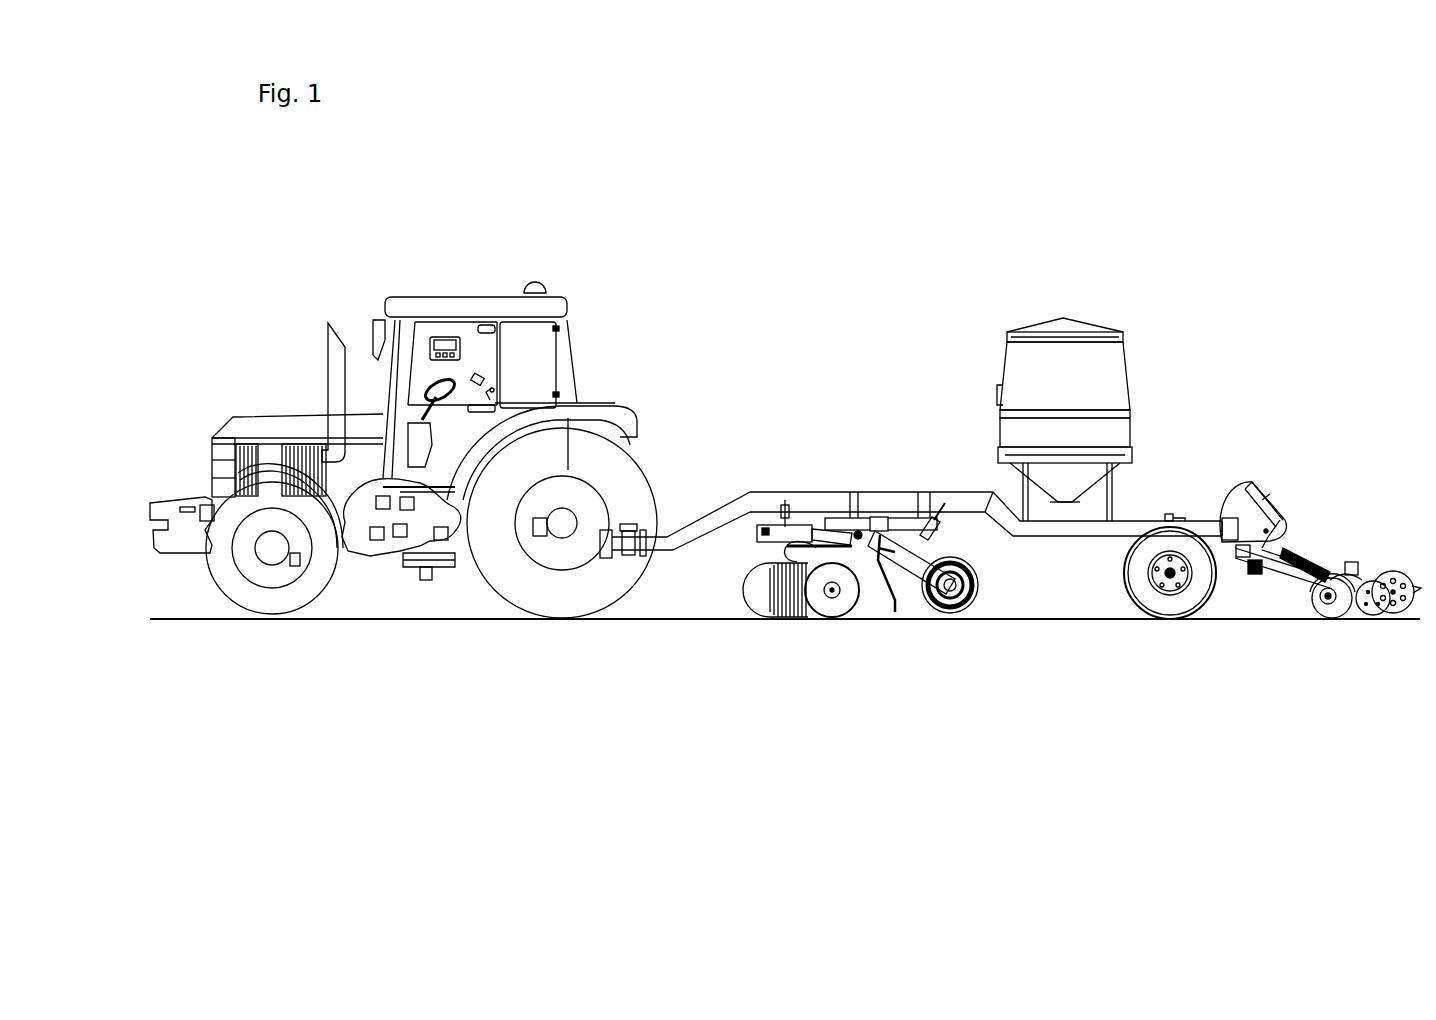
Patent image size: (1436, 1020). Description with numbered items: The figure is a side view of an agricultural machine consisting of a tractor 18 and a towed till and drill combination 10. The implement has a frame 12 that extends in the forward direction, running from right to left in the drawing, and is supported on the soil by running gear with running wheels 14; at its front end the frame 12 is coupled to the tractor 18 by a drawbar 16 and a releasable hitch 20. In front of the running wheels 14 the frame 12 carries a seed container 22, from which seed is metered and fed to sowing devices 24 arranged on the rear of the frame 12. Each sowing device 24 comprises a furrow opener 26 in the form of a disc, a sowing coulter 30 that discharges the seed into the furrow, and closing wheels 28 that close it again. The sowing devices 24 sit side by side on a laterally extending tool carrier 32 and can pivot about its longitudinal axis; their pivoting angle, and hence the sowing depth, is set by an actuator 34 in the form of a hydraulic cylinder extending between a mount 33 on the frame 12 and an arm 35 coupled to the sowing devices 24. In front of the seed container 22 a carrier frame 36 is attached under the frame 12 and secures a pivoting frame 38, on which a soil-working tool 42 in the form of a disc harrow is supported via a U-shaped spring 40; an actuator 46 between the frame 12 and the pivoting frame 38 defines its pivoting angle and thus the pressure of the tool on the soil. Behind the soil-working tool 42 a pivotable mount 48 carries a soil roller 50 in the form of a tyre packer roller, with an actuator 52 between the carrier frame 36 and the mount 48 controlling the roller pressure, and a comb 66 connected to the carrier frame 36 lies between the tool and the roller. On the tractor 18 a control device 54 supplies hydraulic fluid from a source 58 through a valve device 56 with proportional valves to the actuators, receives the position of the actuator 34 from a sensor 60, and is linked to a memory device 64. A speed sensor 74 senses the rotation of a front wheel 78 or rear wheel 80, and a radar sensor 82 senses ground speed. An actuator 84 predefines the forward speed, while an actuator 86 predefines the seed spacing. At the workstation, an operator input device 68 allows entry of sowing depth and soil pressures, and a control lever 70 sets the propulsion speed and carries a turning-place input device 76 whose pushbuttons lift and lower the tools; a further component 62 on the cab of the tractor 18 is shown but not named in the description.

The till and drill combination 10 is at (936, 316).
The frame 12 is at (910, 494).
The running wheels 14 is at (1168, 600).
The drawbar 16 is at (690, 543).
The tractor 18 is at (347, 282).
The releasable hitch 20 is at (630, 526).
The seed container 22 is at (1118, 362).
The sowing devices 24 is at (1341, 514).
The furrow opener 26 is at (1340, 613).
The closing wheels 28 is at (1393, 571).
The sowing coulter 30 is at (1320, 600).
The tool carrier 32 is at (1279, 570).
The mount 33 is at (1232, 502).
The actuator 34 is at (1258, 492).
The arm 35 is at (1284, 522).
The carrier frame 36 is at (881, 516).
The pivoting frame 38 is at (768, 536).
The U-shaped spring 40 is at (778, 566).
The soil-working tool 42 is at (838, 600).
The actuator 46 is at (783, 502).
The mount 48 is at (912, 566).
The soil roller 50 is at (980, 590).
The actuator 52 is at (930, 545).
The control device 54 is at (388, 512).
The valve device 56 is at (442, 537).
The source of pressurized hydraulic fluid 58 is at (372, 534).
The sensor 60 is at (1250, 568).
The beacon / antenna 62 is at (534, 287).
The memory device 64 is at (399, 536).
The comb 66 is at (893, 587).
The operator input device 68 is at (469, 340).
The control lever 70 is at (474, 380).
The speed sensor 74 is at (297, 566).
The turning-place input device 76 is at (494, 388).
The front wheel 78 is at (272, 600).
The rear wheel 80 is at (559, 590).
The radar sensor 82 is at (429, 582).
The actuator 84 is at (468, 588).
The actuator 86 is at (1352, 560).